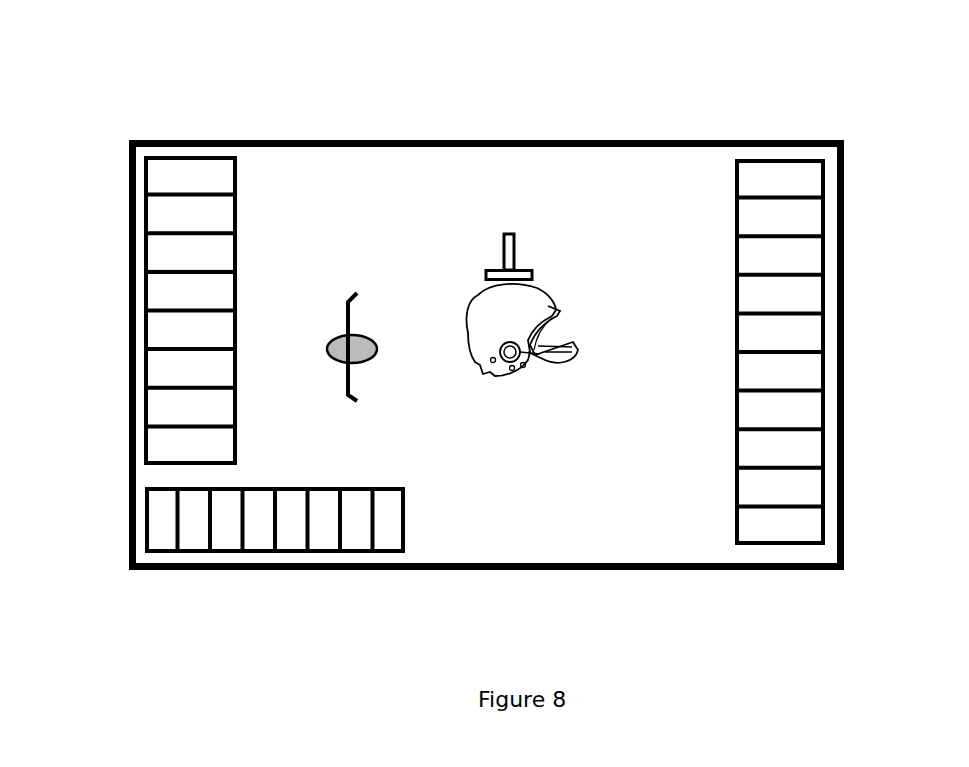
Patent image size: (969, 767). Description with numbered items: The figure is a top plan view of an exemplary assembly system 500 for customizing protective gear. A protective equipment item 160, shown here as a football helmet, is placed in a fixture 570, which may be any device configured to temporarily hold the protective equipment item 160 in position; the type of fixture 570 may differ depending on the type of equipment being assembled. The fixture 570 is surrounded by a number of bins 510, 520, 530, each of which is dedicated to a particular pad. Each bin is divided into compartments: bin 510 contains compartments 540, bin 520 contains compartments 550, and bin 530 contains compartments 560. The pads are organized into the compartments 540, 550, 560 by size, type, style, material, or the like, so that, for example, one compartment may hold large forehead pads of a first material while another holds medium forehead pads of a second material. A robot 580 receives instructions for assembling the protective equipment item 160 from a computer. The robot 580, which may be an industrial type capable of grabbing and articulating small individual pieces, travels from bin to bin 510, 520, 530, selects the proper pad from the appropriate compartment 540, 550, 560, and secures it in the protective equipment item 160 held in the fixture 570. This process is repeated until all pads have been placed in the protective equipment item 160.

The display screen 500 is at (218, 107).
The bin 510 is at (143, 351).
The bin 520 is at (417, 530).
The bin 530 is at (803, 152).
The compartments 540 is at (163, 251).
The compartments 550 is at (252, 547).
The compartments 560 is at (800, 530).
The fixture 570 is at (513, 253).
The robot 580 is at (347, 342).
The protective equipment item 160 is at (577, 302).